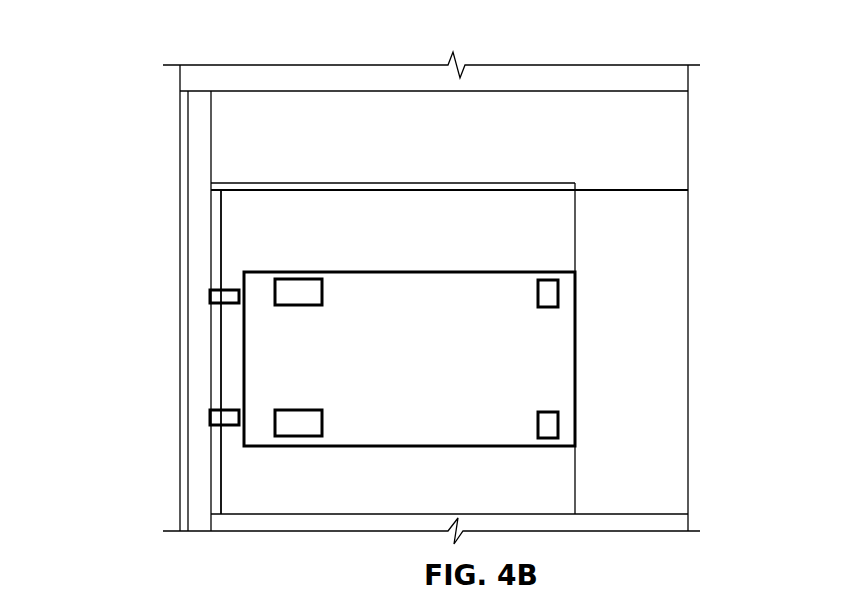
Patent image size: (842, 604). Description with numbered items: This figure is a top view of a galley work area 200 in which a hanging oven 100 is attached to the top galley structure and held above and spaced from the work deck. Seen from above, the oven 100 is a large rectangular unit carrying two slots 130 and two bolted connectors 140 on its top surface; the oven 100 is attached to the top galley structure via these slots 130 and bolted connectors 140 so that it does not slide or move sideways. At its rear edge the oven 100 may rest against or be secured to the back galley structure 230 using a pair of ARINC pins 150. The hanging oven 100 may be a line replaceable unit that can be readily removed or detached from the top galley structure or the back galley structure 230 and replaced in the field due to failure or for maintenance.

The hanging oven 100 is at (600, 287).
The slots 130 is at (323, 295).
The bolted connectors 140 is at (559, 292).
The ARINC pins 150 is at (208, 297).
The galley work area 200 is at (186, 36).
The back galley structure 230 is at (201, 472).